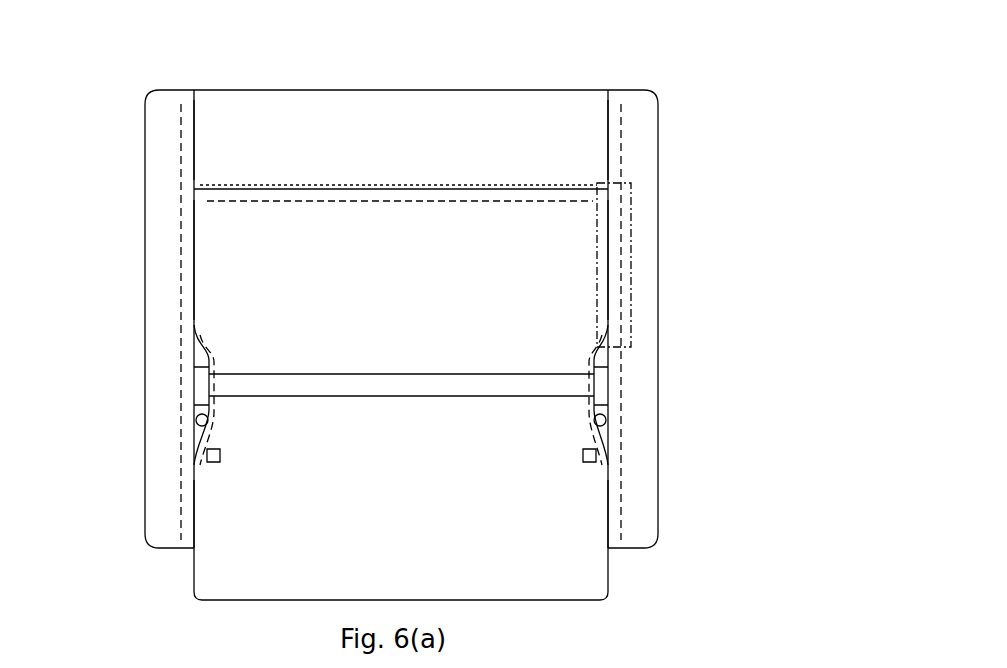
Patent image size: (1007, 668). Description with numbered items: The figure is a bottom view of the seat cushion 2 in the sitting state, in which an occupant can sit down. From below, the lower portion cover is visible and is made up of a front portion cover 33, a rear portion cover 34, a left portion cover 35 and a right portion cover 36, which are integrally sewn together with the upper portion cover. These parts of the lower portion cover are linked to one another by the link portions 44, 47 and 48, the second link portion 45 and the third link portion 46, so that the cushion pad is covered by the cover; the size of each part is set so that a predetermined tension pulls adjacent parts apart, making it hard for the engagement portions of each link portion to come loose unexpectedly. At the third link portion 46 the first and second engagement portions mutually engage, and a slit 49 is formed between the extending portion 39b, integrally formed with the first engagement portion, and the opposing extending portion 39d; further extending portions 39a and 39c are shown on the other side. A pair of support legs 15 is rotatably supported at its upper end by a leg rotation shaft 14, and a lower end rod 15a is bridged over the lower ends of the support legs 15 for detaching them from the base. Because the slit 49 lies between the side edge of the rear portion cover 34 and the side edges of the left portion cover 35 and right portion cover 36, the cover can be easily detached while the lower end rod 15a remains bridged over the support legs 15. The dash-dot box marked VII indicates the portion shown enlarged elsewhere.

The seat cushion 2 is at (768, 97).
The leg rotation shaft 14 is at (222, 460).
The support leg 15 is at (200, 383).
The lower end rod 15a is at (396, 385).
The front portion cover 33 is at (398, 108).
The rear portion cover 34 is at (484, 573).
The left portion cover 35 is at (645, 305).
The right portion cover 36 is at (158, 213).
The extending portion 39a is at (605, 517).
The extending portion 39b is at (200, 517).
The extending portion 39c is at (620, 433).
The extending portion 39d is at (183, 435).
The link portion 44 is at (398, 205).
The second link portion 45 is at (604, 243).
The third link portion 46 is at (200, 243).
The link portion 47 is at (604, 143).
The link portion 48 is at (200, 143).
The slit 49 is at (208, 420).
The VII portion VII is at (630, 240).